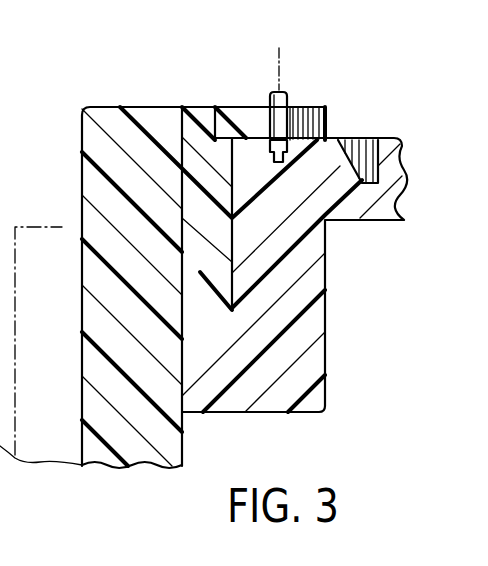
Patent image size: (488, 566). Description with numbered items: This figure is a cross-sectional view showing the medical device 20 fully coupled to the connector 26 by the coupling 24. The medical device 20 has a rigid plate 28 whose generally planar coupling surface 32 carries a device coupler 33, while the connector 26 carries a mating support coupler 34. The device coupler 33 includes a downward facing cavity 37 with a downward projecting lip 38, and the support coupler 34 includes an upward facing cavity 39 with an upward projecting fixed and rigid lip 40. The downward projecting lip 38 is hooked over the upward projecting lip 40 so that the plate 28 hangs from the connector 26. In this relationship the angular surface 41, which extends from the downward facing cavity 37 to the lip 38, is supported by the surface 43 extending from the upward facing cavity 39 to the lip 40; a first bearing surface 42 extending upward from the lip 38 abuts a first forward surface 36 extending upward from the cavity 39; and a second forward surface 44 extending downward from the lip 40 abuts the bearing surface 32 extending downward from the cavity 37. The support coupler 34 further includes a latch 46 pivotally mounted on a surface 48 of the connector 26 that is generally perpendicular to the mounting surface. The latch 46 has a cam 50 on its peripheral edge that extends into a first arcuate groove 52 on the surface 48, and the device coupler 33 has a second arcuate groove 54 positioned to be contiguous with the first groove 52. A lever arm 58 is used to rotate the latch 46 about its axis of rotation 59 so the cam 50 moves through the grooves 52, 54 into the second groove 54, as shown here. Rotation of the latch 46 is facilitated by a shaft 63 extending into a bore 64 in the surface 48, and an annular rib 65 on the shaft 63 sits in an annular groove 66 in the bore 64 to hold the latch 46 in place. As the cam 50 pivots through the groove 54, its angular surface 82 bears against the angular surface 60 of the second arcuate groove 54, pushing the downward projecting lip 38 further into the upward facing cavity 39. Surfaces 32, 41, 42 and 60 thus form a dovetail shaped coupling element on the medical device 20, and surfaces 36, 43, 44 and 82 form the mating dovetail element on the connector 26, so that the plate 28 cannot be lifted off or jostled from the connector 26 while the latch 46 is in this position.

The medical device 20 is at (80, 478).
The coupling 24 is at (219, 59).
The connector 26 is at (427, 151).
The rigid plate 28 is at (91, 105).
The coupling surface 32 is at (182, 436).
The device coupler 33 is at (186, 222).
The support coupler 34 is at (297, 412).
The first forward surface 36 is at (295, 226).
The downward facing cavity 37 is at (182, 266).
The downward projecting lip 38 is at (244, 305).
The upward facing cavity 39 is at (244, 331).
The upward projecting lip 40 is at (182, 296).
The angular surface 41 is at (203, 294).
The first bearing surface 42 is at (226, 205).
The surface 43 is at (228, 316).
The second forward surface 44 is at (182, 401).
The latch 46 is at (347, 96).
The surface 48 is at (380, 140).
The cam 50 is at (197, 110).
The first arcuate groove 52 is at (378, 168).
The second arcuate groove 54 is at (200, 123).
The lever arm 58 is at (276, 92).
The axis of rotation 59 is at (282, 60).
The angular surface 60 is at (182, 165).
The shaft 63 is at (280, 124).
The bore 64 is at (278, 165).
The annular rib 65 is at (287, 154).
The annular groove 66 is at (288, 142).
The angular surface 82 is at (244, 121).